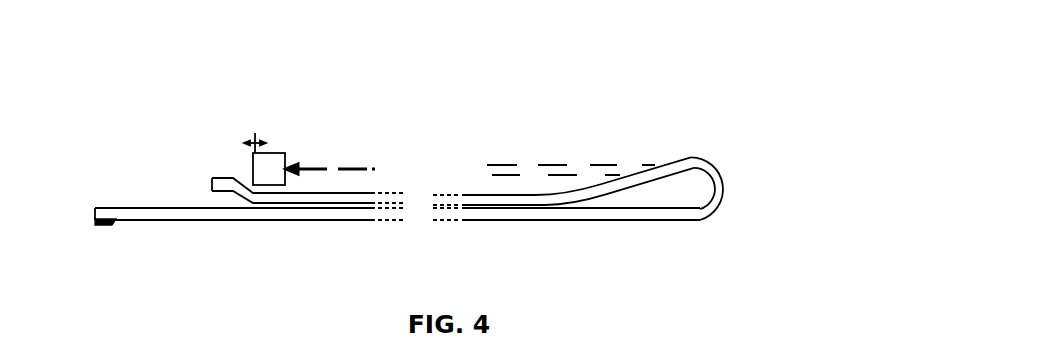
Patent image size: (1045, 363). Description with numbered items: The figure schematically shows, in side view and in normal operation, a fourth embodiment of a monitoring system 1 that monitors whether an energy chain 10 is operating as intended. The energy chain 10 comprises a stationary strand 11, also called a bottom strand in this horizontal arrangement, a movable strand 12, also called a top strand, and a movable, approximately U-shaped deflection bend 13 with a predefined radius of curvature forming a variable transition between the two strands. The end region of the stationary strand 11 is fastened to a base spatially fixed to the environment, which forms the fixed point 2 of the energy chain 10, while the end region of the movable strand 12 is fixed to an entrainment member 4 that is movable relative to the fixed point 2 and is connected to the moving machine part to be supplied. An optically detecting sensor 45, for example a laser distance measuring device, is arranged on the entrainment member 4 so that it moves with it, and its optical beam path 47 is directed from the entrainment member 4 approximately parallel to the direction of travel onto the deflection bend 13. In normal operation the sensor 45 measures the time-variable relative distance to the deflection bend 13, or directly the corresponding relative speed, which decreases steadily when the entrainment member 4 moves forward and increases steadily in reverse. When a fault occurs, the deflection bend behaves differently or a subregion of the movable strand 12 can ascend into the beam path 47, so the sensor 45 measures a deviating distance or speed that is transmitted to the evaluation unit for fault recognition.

The monitoring system 1 is at (110, 77).
The fixed point 2 is at (113, 213).
The entrainment member 4 is at (240, 121).
The energy chain 10 is at (175, 216).
The stationary strand 11 is at (361, 232).
The movable strand 12 is at (516, 184).
The deflection bend 13 is at (734, 214).
The optically detecting sensor 45 is at (270, 167).
The optical beam path 47 is at (607, 152).